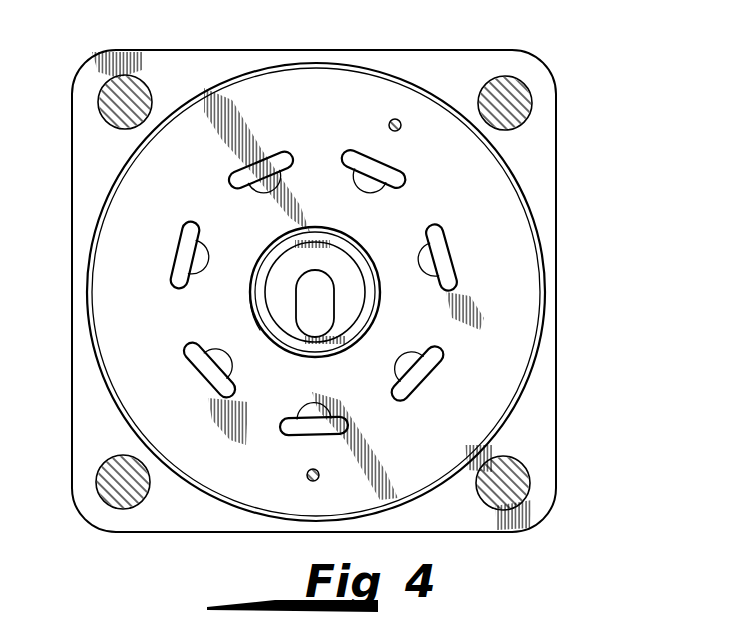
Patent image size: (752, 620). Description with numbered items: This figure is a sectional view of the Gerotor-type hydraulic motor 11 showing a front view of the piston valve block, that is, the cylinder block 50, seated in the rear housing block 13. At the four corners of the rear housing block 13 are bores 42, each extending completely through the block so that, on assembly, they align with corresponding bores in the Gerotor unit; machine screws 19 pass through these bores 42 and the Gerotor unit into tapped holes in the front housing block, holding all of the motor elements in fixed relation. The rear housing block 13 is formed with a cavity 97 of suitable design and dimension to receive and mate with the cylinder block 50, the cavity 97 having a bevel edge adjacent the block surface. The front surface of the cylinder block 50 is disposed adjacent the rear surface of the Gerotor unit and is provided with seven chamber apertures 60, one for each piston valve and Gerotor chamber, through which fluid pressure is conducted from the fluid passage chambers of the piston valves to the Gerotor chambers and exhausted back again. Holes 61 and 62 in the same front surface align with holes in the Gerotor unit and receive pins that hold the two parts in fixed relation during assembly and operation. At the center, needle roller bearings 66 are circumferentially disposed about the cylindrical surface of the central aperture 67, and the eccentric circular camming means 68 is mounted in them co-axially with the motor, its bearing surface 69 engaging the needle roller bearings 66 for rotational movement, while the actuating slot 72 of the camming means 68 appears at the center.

The motor assembly 11 is at (548, 52).
The rear housing block 13 is at (462, 82).
The machine screws 19 is at (105, 89).
The bores 42 is at (103, 103).
The cylinder block 50 is at (336, 108).
The cavity 97 is at (530, 256).
The chamber apertures 60 is at (231, 183).
The hole 61 is at (318, 472).
The hole 62 is at (399, 123).
The needle roller bearings 66 is at (283, 240).
The central aperture 67 is at (281, 343).
The bearing surface 69 is at (340, 253).
The actuating slot 72 is at (322, 312).
The eccentric circular camming means 68 is at (248, 314).